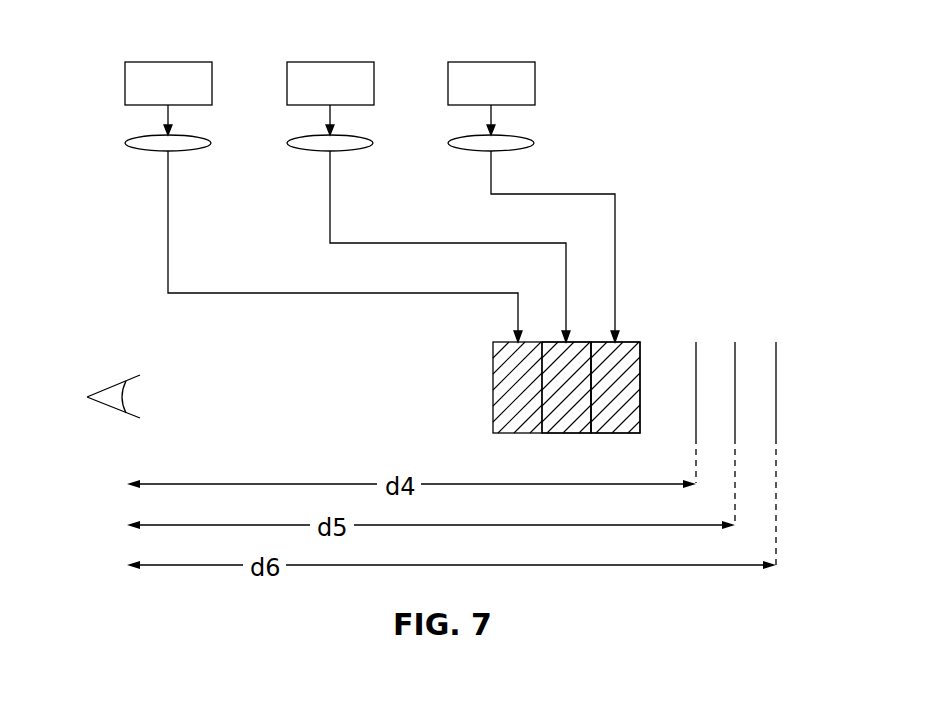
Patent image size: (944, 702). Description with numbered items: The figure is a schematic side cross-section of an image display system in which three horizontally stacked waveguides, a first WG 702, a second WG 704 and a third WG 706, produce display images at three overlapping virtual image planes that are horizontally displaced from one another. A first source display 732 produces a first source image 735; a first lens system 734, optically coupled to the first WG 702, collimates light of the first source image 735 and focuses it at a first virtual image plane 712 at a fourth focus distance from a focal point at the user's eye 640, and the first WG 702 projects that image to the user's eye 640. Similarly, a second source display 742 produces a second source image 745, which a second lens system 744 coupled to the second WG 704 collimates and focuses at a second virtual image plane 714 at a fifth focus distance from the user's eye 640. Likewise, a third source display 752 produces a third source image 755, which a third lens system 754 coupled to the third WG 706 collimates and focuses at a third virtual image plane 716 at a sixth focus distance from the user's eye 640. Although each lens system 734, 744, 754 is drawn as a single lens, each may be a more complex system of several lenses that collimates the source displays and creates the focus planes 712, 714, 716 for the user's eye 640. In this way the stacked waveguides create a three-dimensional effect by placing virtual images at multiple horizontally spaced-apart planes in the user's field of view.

The third source display 752 is at (168, 62).
The third source image 755 is at (163, 117).
The third lens system 754 is at (160, 152).
The second source display 742 is at (330, 62).
The second source image 745 is at (325, 117).
The second lens system 744 is at (322, 152).
The first source display 732 is at (491, 62).
The first source image 735 is at (500, 115).
The first lens system 734 is at (484, 152).
The third WG 706 is at (510, 342).
The second WG 704 is at (566, 433).
The first WG 702 is at (615, 433).
The first virtual image plane 712 is at (696, 362).
The second virtual image plane 714 is at (735, 406).
The third virtual image plane 716 is at (776, 358).
The user's eye 640 is at (122, 386).